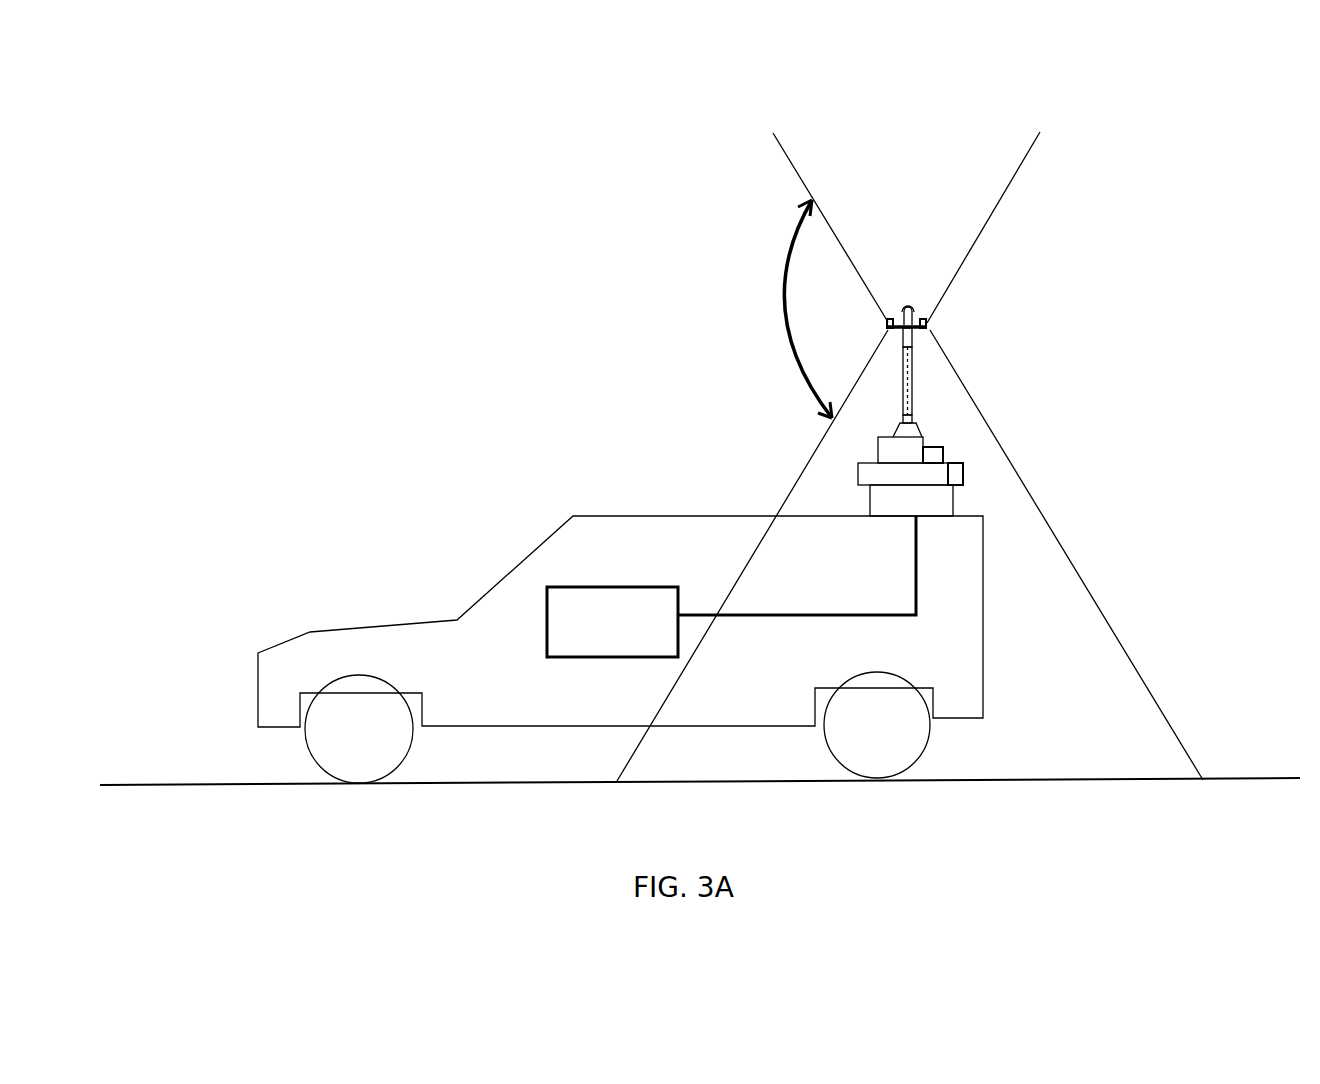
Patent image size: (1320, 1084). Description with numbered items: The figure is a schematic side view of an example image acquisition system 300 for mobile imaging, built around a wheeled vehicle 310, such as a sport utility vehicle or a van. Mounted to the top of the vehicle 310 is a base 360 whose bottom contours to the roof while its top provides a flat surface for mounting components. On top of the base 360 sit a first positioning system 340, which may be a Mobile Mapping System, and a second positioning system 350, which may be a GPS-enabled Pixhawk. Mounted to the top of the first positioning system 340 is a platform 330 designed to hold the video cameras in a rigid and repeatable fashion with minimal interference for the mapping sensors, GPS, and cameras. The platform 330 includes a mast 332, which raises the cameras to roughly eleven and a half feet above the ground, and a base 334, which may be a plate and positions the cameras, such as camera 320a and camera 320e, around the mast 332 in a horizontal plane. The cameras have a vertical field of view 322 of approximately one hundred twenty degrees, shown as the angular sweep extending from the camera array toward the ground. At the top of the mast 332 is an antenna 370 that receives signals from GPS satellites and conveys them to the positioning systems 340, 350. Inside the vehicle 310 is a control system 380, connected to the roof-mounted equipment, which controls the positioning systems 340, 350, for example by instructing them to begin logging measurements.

The image acquisition system 300 is at (1197, 134).
The vehicle 310 is at (650, 516).
The video camera 320a is at (887, 325).
The video camera 320e is at (928, 322).
The vertical field of view 322 is at (787, 328).
The platform 330 is at (912, 392).
The mast 332 is at (903, 363).
The base 334 is at (917, 330).
The first positioning system 340 is at (878, 445).
The second positioning system 350 is at (945, 453).
The base 360 is at (963, 473).
The antenna 370 is at (907, 306).
The control system 380 is at (600, 587).